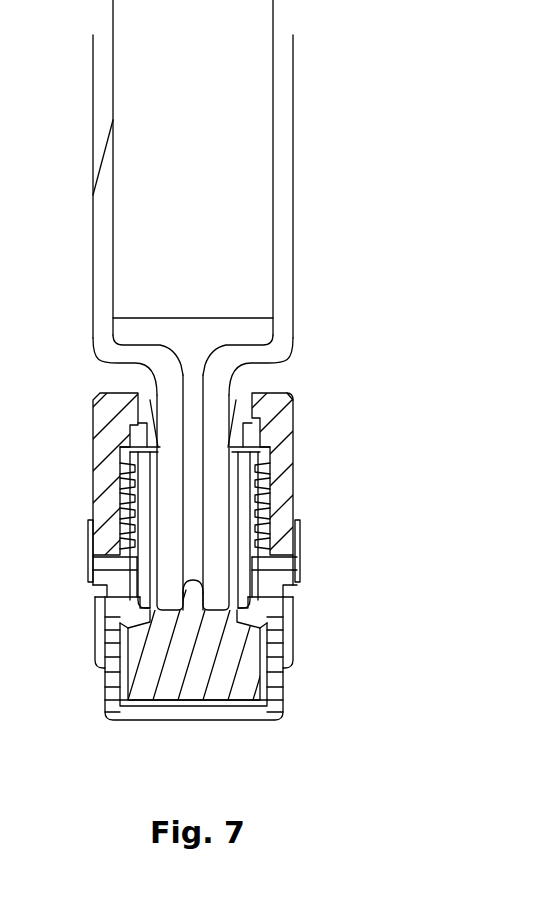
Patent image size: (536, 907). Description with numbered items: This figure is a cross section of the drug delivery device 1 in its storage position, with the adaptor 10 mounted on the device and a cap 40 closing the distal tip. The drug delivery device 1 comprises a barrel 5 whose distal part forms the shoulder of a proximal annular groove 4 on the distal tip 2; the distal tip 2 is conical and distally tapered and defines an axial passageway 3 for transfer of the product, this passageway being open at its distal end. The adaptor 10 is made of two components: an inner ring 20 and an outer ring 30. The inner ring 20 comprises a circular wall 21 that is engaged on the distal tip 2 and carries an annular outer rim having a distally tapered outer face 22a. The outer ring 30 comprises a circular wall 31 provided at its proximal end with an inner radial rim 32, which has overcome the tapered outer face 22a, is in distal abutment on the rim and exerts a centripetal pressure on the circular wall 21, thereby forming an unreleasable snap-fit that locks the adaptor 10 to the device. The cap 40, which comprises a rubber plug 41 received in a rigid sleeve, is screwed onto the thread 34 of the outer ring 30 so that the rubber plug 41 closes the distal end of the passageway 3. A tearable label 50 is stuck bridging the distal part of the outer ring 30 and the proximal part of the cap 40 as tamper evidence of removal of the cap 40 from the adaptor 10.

The drug delivery device 1 is at (64, 264).
The barrel 5 is at (283, 178).
The proximal annular groove 4 is at (243, 390).
The adaptor 10 is at (357, 488).
The inner ring 20 is at (93, 425).
The circular wall 21 is at (116, 418).
The distally tapered outer face 22a is at (125, 440).
The outer ring 30 is at (322, 457).
The circular wall 31 is at (293, 400).
The inner radial rim 32 is at (240, 395).
The thread 34 is at (117, 525).
The tearable label 50 is at (90, 548).
The distal tip 2 is at (242, 556).
The axial passageway 3 is at (250, 592).
The cap 40 is at (63, 626).
The rubber plug 41 is at (193, 683).